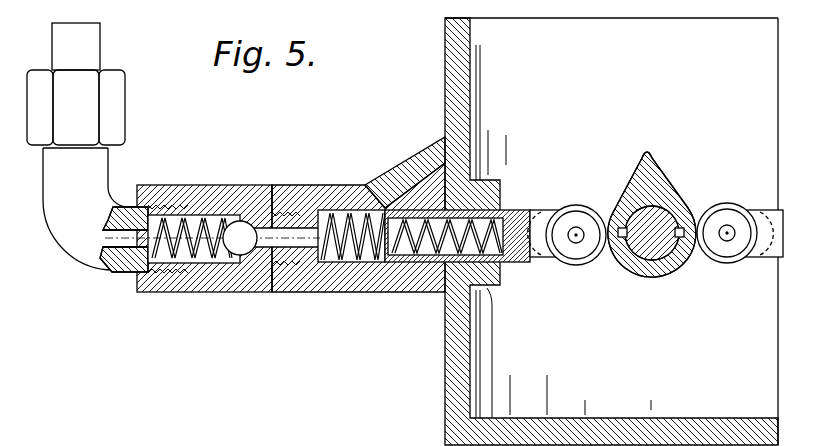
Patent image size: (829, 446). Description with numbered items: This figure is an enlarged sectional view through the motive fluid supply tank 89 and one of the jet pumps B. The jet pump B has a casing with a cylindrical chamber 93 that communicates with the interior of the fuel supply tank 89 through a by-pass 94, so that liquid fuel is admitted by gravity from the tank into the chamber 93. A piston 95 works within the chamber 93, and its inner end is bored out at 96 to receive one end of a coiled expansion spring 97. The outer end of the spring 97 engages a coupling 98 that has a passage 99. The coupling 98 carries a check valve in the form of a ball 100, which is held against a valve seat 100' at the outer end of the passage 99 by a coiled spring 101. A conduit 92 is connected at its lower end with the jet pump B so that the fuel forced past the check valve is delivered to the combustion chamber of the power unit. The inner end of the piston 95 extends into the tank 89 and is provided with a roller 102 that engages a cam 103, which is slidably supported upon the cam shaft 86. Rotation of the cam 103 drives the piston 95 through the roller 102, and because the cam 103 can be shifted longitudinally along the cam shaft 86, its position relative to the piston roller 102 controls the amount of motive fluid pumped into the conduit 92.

The conduit 92 is at (87, 46).
The fuel supply tank 89 is at (452, 56).
The by-pass 94 is at (405, 183).
The ball 100 is at (236, 202).
The coupling 98 is at (262, 195).
The passage 99 is at (285, 242).
The coiled spring 101 is at (207, 257).
The valve seat 100' is at (254, 258).
The jet pump B is at (282, 290).
The chamber 93 is at (357, 255).
The coiled expansion spring 97 is at (407, 245).
The bore 96 is at (491, 290).
The piston 95 is at (515, 250).
The roller 102 is at (583, 268).
The cam shaft 86 is at (657, 250).
The cam 103 is at (665, 172).